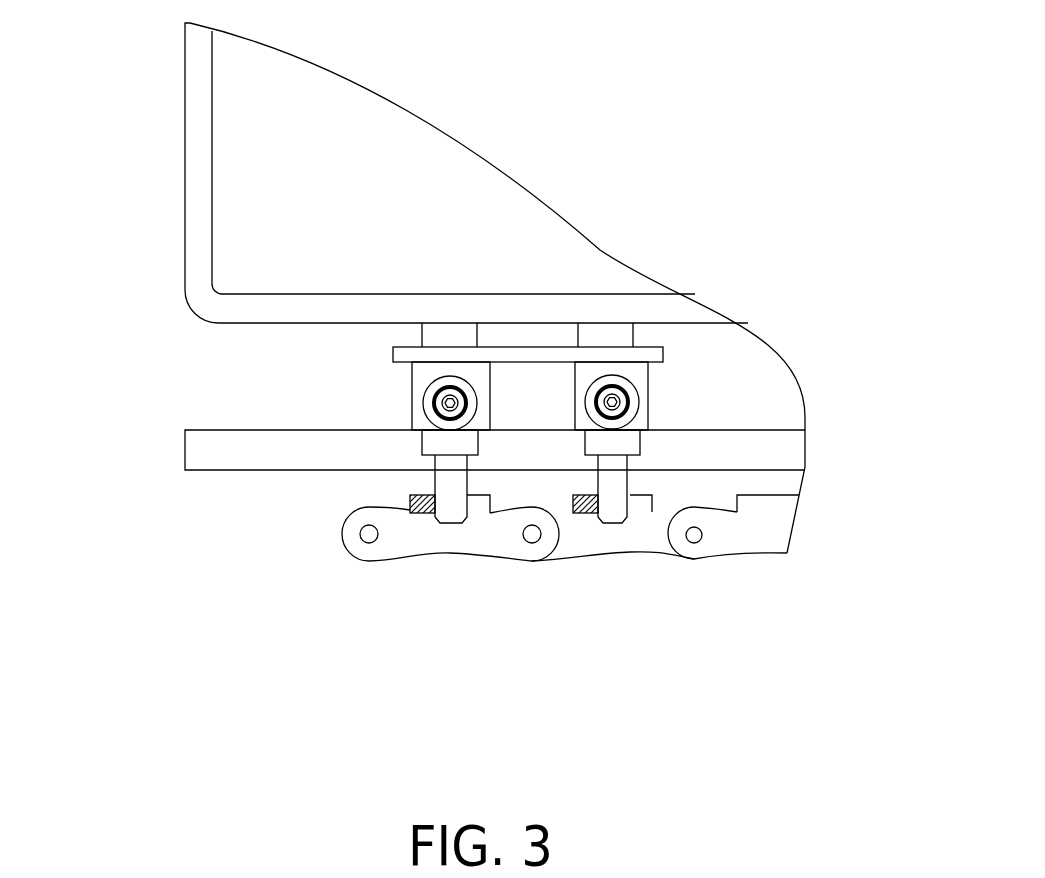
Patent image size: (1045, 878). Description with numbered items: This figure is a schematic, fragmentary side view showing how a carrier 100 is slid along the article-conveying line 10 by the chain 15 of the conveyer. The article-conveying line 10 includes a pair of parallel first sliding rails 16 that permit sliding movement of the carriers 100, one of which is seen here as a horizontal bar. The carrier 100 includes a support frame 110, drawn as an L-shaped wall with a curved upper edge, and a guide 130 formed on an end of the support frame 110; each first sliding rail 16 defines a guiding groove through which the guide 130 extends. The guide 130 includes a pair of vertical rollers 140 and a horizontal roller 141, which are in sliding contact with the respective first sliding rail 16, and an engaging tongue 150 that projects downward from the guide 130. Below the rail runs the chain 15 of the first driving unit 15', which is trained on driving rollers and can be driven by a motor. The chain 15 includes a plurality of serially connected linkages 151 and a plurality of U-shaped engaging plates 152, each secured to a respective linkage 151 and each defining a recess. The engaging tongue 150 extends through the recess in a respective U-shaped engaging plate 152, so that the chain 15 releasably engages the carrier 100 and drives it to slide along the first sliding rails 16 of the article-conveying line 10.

The article-conveying line 10 is at (311, 580).
The chain 15 is at (531, 603).
The first driving unit 15' is at (727, 595).
The first sliding rail 16 is at (214, 440).
The carrier 100 is at (170, 138).
The support frame 110 is at (197, 192).
The guide 130 is at (605, 352).
The vertical roller 140 is at (628, 390).
The horizontal roller 141 is at (628, 443).
The engaging tongue 150 is at (627, 472).
The linkage 151 is at (387, 542).
The U-shaped engaging plate 152 is at (417, 513).